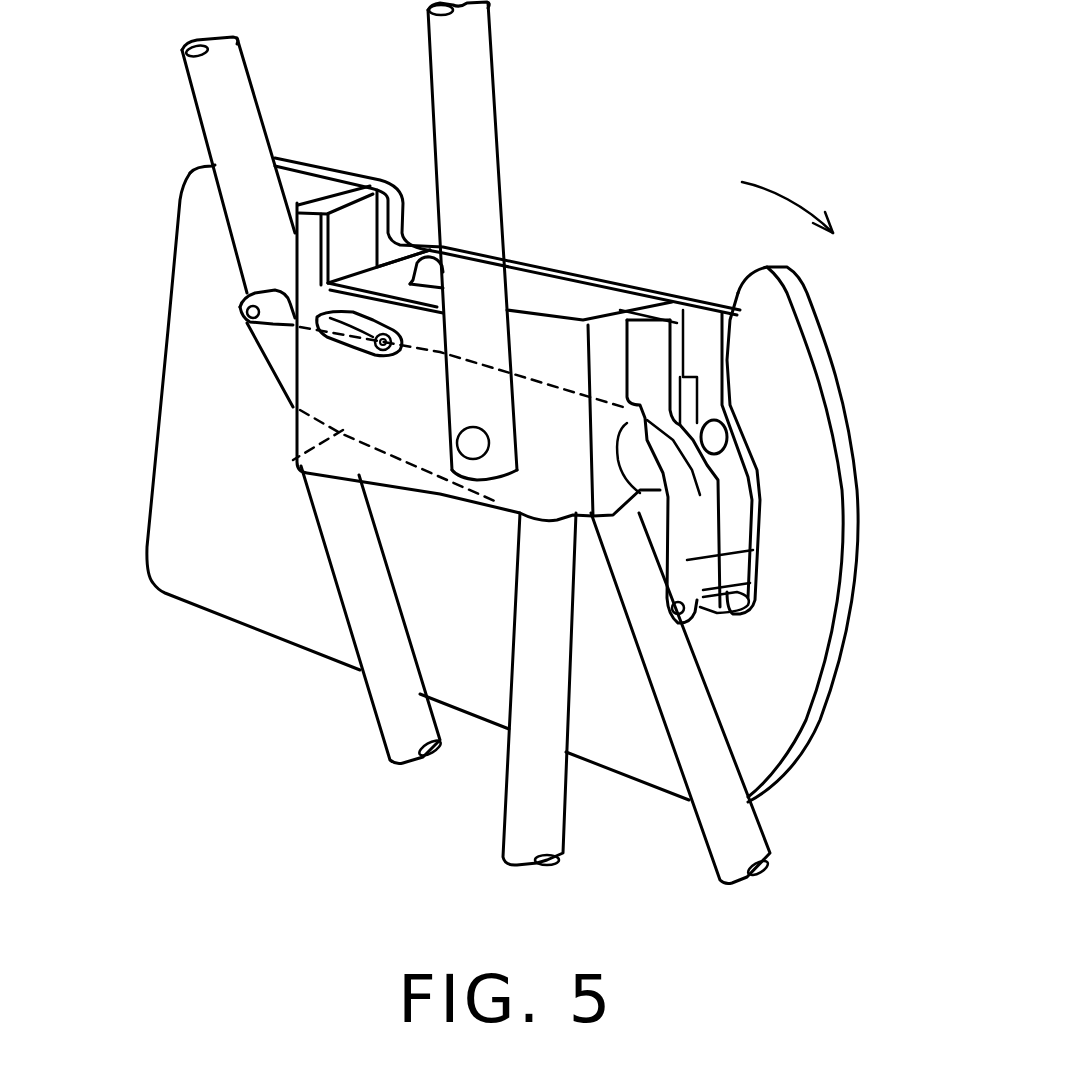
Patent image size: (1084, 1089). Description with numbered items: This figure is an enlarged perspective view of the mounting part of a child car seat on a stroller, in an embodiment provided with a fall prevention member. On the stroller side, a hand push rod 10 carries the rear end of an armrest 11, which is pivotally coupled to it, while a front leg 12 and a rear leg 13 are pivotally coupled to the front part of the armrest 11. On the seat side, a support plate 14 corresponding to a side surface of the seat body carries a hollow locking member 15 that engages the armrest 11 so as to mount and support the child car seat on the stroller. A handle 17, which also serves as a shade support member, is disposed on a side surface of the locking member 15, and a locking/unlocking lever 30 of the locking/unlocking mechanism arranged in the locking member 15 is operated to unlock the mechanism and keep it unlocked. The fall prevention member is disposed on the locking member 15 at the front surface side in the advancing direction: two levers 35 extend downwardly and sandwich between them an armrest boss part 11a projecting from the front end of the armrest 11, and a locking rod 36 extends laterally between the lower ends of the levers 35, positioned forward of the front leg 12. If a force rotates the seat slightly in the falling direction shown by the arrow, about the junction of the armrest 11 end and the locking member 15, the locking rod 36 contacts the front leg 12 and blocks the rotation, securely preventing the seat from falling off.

The hand push rod 10 is at (217, 111).
The armrest 11 is at (290, 458).
The armrest boss part 11a is at (717, 437).
The front leg 12 is at (713, 752).
The rear leg 13 is at (547, 797).
The support plate 14 is at (817, 348).
The locking member 15 is at (565, 337).
The handle 17 is at (473, 80).
The locking/unlocking lever 30 is at (347, 342).
The levers 35 is at (753, 502).
The locking rod 36 is at (723, 597).